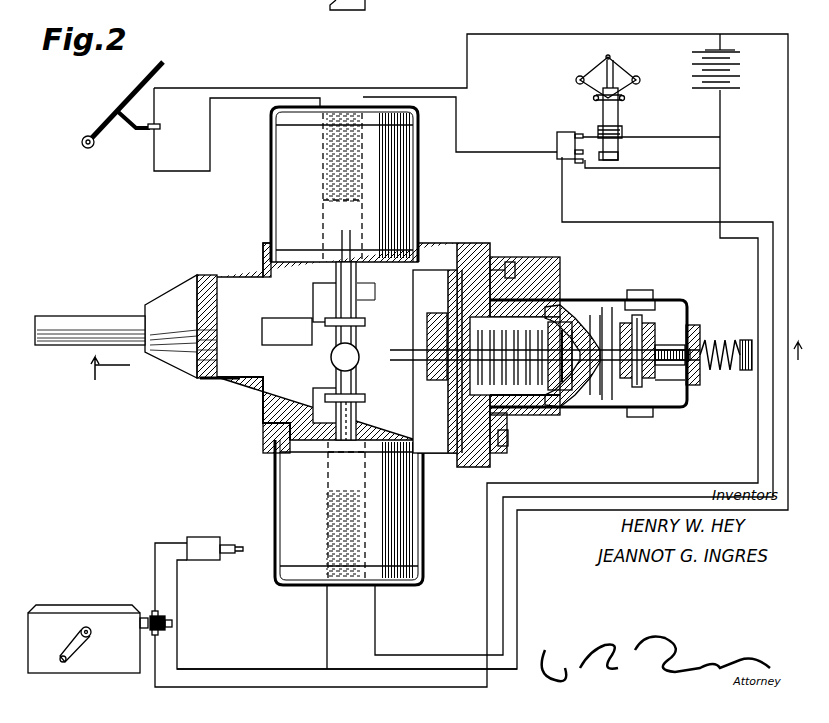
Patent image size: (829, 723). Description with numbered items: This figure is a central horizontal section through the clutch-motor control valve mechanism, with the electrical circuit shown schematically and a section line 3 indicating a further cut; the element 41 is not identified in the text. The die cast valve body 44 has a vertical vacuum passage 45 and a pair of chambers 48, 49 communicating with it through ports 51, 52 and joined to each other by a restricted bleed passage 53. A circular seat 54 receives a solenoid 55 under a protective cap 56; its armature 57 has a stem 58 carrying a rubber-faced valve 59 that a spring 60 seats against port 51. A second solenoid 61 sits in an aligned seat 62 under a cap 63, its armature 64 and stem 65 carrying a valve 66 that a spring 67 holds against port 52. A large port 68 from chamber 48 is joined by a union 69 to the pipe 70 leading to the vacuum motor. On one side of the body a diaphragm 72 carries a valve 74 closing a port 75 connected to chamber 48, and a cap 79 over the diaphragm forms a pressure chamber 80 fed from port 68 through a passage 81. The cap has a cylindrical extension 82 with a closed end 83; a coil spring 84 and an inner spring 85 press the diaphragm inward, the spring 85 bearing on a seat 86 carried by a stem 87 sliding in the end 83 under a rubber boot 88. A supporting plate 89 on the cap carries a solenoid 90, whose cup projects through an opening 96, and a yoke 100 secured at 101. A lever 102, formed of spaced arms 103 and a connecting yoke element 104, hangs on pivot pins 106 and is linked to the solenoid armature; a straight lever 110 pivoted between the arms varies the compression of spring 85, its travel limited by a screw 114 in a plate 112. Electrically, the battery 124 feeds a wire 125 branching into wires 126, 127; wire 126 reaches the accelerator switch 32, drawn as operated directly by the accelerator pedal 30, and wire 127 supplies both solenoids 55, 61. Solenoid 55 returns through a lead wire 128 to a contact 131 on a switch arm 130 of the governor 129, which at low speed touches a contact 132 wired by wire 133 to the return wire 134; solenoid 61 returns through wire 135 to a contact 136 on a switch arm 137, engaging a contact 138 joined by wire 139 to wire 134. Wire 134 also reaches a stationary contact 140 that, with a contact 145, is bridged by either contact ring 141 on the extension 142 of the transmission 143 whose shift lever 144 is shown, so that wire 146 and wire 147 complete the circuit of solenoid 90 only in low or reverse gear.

The accelerator pedal 30 is at (140, 80).
The accelerator controlled switch 32 is at (146, 136).
The member 41 is at (327, 8).
The valve body 44 is at (232, 272).
The vertical passage 45 is at (345, 351).
The chamber 48 is at (326, 302).
The chamber 49 is at (326, 408).
The port 51 is at (356, 322).
The port 52 is at (356, 402).
The bleed passage 53 is at (275, 396).
The circular seat 54 is at (425, 243).
The solenoid 55 is at (395, 190).
The protective cap 56 is at (413, 157).
The armature 57 is at (323, 214).
The stem 58 is at (346, 250).
The valve 59 is at (315, 328).
The spring 60 is at (325, 156).
The second solenoid 61 is at (400, 518).
The circular seat 62 is at (263, 462).
The cap 63 is at (275, 501).
The armature 64 is at (328, 470).
The stem 65 is at (324, 452).
The valve 66 is at (352, 420).
The spring 67 is at (326, 534).
The port 68 is at (282, 383).
The union 69 is at (168, 300).
The pipe 70 is at (106, 316).
The diaphragm 72 is at (465, 243).
The valve 74 is at (435, 361).
The port 75 is at (502, 245).
The cap 79 is at (478, 258).
The pressure chamber 80 is at (548, 318).
The passage 81 is at (263, 258).
The cylindrical extension 82 is at (548, 305).
The closed outer end 83 is at (585, 330).
The coil spring 84 is at (566, 322).
The inner coil spring 85 is at (508, 440).
The spring seat 86 is at (530, 410).
The stem 87 is at (590, 400).
The rubber boot 88 is at (620, 300).
The supporting plate 89 is at (498, 455).
The solenoid 90 is at (194, 537).
The opening 96 is at (366, 290).
The yoke 100 is at (688, 302).
The securing point 101 is at (515, 270).
The lever 102 is at (652, 298).
The spaced arms 103 is at (660, 408).
The connecting yoke element 104 is at (608, 408).
The pivot pins 106 is at (650, 292).
The lever 110 is at (668, 340).
The plate 112 is at (700, 335).
The screw 114 is at (745, 372).
The battery 124 is at (708, 90).
The wire 125 is at (716, 42).
The wire 126 is at (652, 34).
The wire 127 is at (186, 171).
The lead wire 128 is at (500, 152).
The governor 129 is at (596, 98).
The switch arm 130 is at (606, 160).
The contact 131 is at (557, 158).
The contact 132 is at (578, 165).
The wire 133 is at (650, 168).
The wire 134 is at (720, 150).
The wire 135 is at (562, 203).
The contact 136 is at (598, 130).
The switch arm 137 is at (592, 130).
The contact 138 is at (557, 140).
The wire 139 is at (670, 137).
The stationary contact 140 is at (165, 630).
The contact rings 141 is at (150, 611).
The extension 142 is at (172, 623).
The transmission 143 is at (76, 605).
The shift lever 144 is at (72, 646).
The contact 145 is at (160, 612).
The wire 146 is at (155, 560).
The wire 147 is at (232, 669).
The section line 3 is at (427, 352).